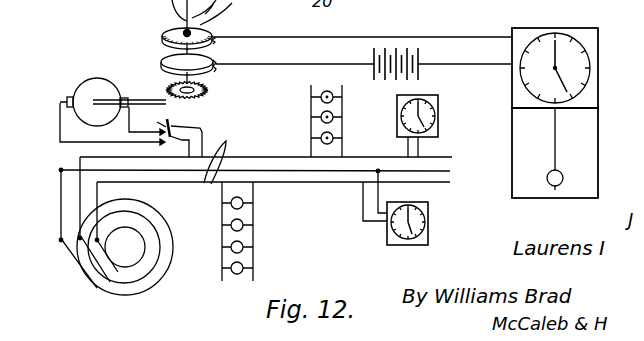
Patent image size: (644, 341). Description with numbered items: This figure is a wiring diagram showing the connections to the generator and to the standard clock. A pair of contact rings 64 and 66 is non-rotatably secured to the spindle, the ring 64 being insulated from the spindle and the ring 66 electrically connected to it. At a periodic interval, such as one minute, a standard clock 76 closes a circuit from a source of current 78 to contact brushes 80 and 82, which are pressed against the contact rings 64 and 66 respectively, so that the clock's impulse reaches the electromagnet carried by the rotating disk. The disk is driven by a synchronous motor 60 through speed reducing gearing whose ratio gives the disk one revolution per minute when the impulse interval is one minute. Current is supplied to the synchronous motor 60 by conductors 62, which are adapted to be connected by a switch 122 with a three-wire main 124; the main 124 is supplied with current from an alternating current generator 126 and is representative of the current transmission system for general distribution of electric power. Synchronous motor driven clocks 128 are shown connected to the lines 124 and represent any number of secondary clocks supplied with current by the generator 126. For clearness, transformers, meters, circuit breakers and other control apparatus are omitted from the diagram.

The synchronous motor 60 is at (76, 91).
The conductors 62 is at (80, 142).
The contact ring 64 is at (162, 38).
The contact ring 66 is at (161, 64).
The standard clock 76 is at (592, 90).
The source of current 78 is at (398, 48).
The contact brush 80 is at (222, 37).
The contact brush 82 is at (222, 64).
The switch 122 is at (173, 122).
The three-wire main 124 is at (227, 143).
The alternating current generator 126 is at (132, 253).
The synchronous motor driven clocks 128 is at (438, 127).